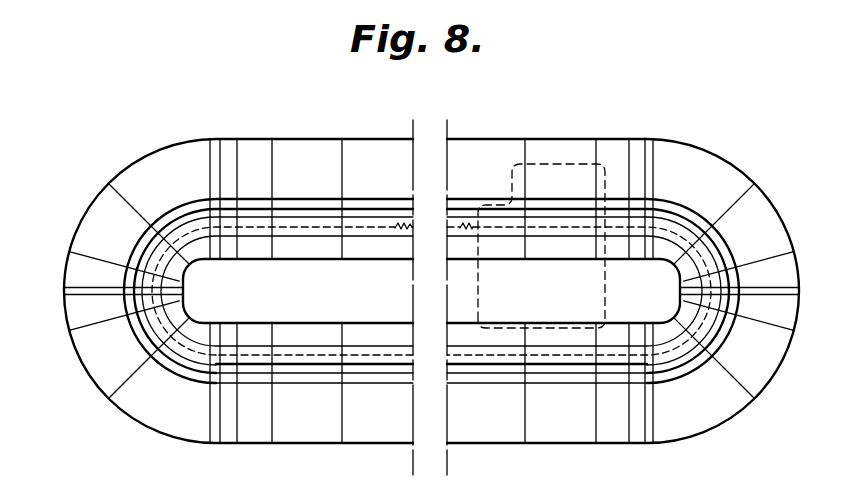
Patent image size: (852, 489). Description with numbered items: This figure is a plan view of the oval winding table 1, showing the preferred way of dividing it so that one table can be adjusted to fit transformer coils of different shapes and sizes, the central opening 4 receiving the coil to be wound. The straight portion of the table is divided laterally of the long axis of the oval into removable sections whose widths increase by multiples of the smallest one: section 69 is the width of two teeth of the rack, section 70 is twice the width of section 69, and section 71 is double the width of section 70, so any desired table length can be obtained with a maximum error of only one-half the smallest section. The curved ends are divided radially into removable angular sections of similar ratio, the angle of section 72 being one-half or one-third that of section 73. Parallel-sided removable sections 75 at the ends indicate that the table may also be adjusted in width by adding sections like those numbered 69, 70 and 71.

The stator body 1 is at (431, 291).
The central opening 4 is at (495, 293).
The removable section 69 is at (651, 148).
The removable section 70 is at (637, 150).
The removable section 71 is at (607, 152).
The angular section 72 is at (780, 317).
The angular section 73 is at (773, 345).
The parallel-sided removable sections 75 is at (805, 293).